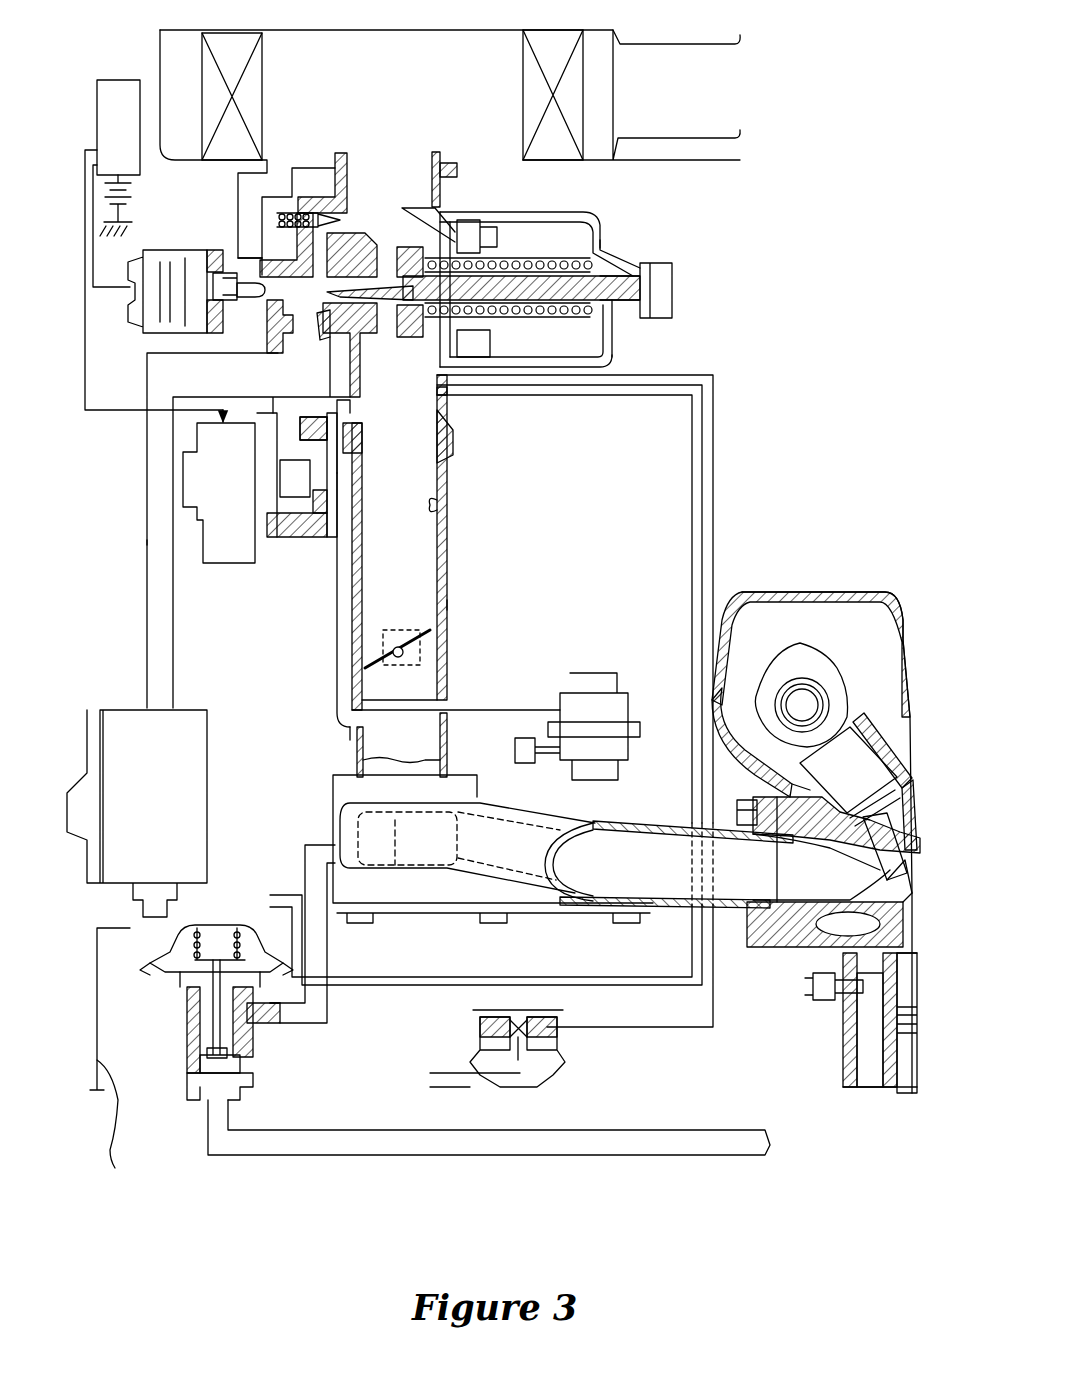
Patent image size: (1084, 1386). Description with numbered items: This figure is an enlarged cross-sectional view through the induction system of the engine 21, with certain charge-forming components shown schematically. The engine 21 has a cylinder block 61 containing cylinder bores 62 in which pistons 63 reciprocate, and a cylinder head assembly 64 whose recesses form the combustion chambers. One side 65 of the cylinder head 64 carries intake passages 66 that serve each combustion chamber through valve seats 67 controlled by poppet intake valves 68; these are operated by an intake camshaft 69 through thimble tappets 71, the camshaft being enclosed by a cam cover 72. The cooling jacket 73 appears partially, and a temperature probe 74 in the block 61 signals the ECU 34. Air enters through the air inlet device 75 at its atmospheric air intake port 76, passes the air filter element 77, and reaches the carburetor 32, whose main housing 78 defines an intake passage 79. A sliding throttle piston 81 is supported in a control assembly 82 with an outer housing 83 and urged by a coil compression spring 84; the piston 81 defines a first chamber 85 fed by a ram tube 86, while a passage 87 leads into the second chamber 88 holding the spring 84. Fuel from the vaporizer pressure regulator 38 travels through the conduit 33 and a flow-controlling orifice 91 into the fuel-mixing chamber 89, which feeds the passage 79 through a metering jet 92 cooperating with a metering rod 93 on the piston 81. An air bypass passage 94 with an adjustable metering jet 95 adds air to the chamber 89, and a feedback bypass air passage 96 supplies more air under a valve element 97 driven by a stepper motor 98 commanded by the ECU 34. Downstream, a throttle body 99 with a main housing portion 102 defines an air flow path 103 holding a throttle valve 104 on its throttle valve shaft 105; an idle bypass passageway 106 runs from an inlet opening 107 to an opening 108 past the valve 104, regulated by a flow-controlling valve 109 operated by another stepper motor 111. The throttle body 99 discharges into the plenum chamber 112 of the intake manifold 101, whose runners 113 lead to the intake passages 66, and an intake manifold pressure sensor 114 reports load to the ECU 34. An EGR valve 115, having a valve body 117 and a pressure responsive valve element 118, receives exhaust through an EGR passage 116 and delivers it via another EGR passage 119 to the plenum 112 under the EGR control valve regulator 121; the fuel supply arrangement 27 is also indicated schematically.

The engine 21 is at (858, 580).
The fuel supply system 27 is at (124, 1058).
The carburetor 32 is at (697, 222).
The conduit 33 is at (147, 543).
The ECU 34 is at (121, 70).
The vaporizer pressure regulator 38 is at (212, 815).
The cylinder block 61 is at (840, 1077).
The cylinder bores 62 is at (893, 1090).
The pistons 63 is at (907, 1093).
The cylinder head assembly 64 is at (795, 957).
The side of the cylinder head 65 is at (745, 790).
The intake passages 66 is at (820, 880).
The valve seats 67 is at (905, 960).
The intake valves 68 is at (898, 870).
The intake camshaft 69 is at (790, 668).
The thimble tappets 71 is at (850, 735).
The cam cover 72 is at (782, 590).
The cooling jacket 73 is at (845, 1053).
The temperature probe 74 is at (830, 1000).
The air inlet device 75 is at (655, 157).
The atmospheric air intake port 76 is at (700, 44).
The air filter element 77 is at (583, 92).
The main housing 78 is at (450, 420).
The intake passage 79 is at (342, 195).
The sliding throttle piston 81 is at (500, 245).
The control assembly 82 is at (610, 213).
The outer housing 83 is at (545, 215).
The coil compression spring 84 is at (570, 315).
The first chamber 85 is at (460, 215).
The ram tube 86 is at (408, 205).
The passage 87 is at (420, 200).
The second chamber 88 is at (510, 270).
The fuel-mixing chamber 89 is at (312, 310).
The flow-controlling orifice 91 is at (323, 340).
The metering jet 92 is at (360, 333).
The metering rod 93 is at (385, 270).
The air bypass passage 94 is at (322, 212).
The adjustable metering jet 95 is at (278, 212).
The bypass air passage 96 is at (243, 199).
The valve element 97 is at (263, 302).
The stepper motor 98 is at (158, 252).
The throttle body 99 is at (455, 563).
The intake manifold 101 is at (545, 825).
The main housing portion 102 is at (450, 610).
The air flow path 103 is at (450, 517).
The throttle valve 104 is at (385, 670).
The throttle valve shaft 105 is at (398, 640).
The idle bypass passageway 106 is at (337, 590).
The inlet opening 107 is at (357, 417).
The opening 108 is at (333, 723).
The flow-controlling valve 109 is at (295, 490).
The stepper motor 111 is at (212, 560).
The plenum chamber 112 is at (405, 875).
The runners 113 is at (515, 865).
The intake manifold pressure sensor 114 is at (592, 715).
The EGR valve 115 is at (176, 1092).
The EGR passage 116 is at (465, 1157).
The valve body 117 is at (282, 1050).
The pressure responsive valve element 118 is at (190, 1007).
The EGR passage 119 is at (328, 1005).
The EGR control valve regulator 121 is at (185, 948).